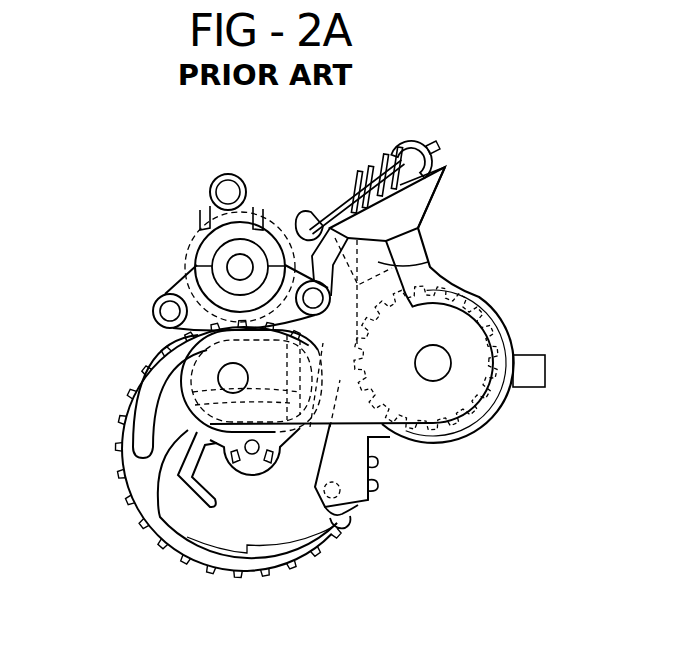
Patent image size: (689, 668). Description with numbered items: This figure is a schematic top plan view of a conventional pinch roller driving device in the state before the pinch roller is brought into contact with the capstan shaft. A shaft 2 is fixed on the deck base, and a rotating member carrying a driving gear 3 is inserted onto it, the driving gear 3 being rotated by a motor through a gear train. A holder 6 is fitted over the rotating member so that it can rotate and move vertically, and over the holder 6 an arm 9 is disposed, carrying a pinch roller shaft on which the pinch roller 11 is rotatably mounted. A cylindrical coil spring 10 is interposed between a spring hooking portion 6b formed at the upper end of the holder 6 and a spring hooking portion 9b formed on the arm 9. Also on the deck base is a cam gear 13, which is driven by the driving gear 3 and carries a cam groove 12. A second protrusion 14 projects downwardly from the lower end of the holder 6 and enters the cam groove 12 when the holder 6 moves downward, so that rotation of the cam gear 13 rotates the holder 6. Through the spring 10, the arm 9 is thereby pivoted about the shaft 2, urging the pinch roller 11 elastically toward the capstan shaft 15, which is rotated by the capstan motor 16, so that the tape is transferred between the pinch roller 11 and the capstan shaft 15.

The shaft 2 is at (437, 368).
The driving gear 3 is at (455, 445).
The holder 6 is at (455, 287).
The spring hooking portion 6b is at (444, 170).
The arm 9 is at (380, 267).
The spring hooking portion 9b is at (305, 215).
The cylindrical coil spring 10 is at (387, 156).
The pinch roller 11 is at (182, 393).
The cam groove 12 is at (167, 490).
The cam gear 13 is at (375, 505).
The second protrusion 14 is at (348, 535).
The capstan shaft 15 is at (240, 267).
The capstan motor 16 is at (185, 256).